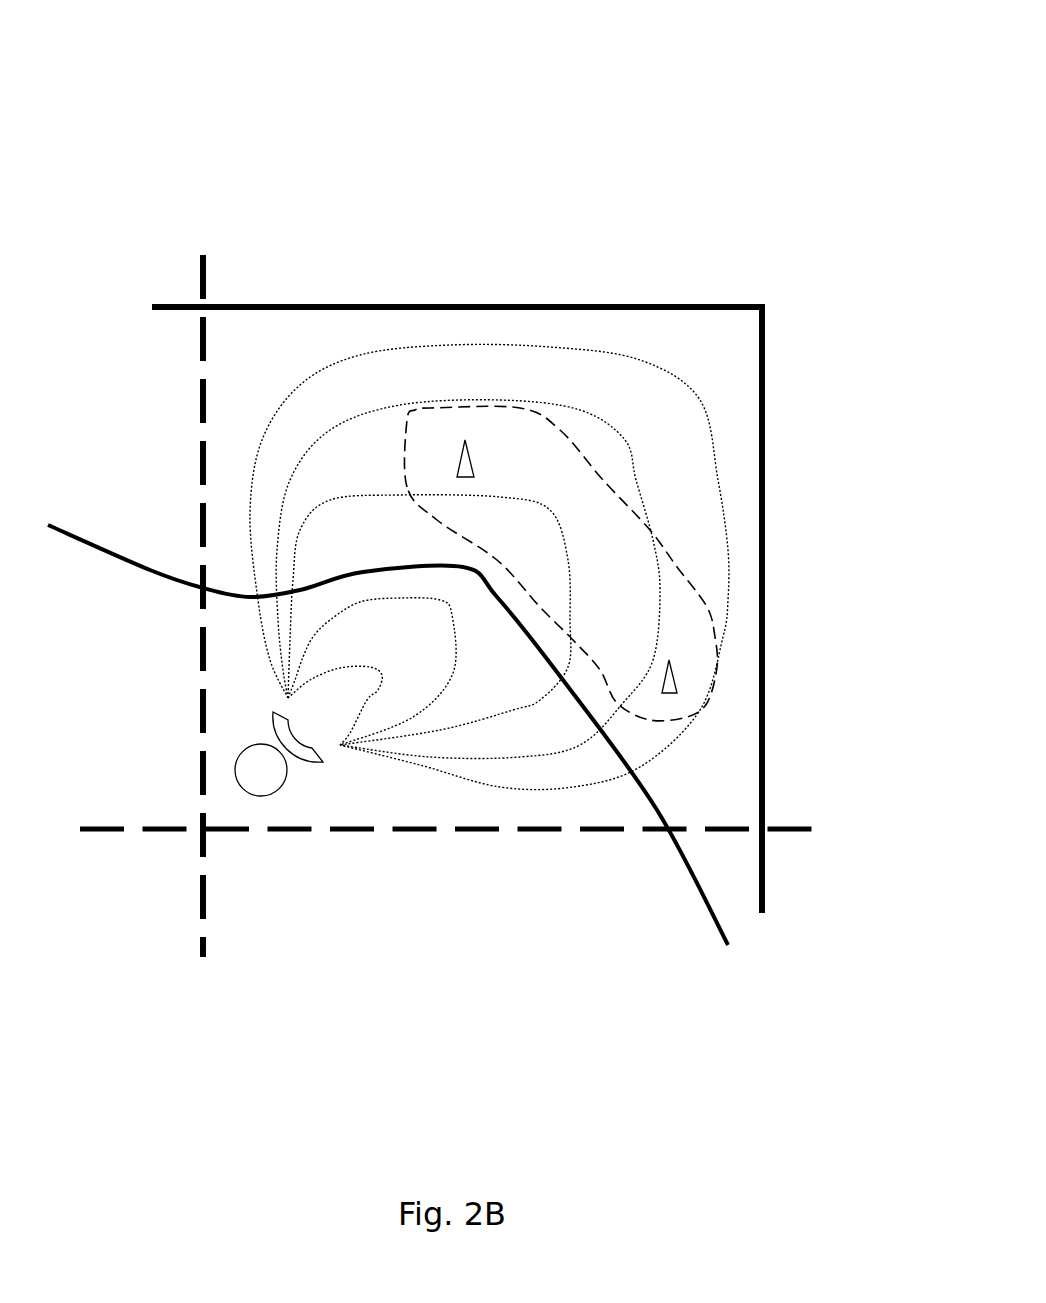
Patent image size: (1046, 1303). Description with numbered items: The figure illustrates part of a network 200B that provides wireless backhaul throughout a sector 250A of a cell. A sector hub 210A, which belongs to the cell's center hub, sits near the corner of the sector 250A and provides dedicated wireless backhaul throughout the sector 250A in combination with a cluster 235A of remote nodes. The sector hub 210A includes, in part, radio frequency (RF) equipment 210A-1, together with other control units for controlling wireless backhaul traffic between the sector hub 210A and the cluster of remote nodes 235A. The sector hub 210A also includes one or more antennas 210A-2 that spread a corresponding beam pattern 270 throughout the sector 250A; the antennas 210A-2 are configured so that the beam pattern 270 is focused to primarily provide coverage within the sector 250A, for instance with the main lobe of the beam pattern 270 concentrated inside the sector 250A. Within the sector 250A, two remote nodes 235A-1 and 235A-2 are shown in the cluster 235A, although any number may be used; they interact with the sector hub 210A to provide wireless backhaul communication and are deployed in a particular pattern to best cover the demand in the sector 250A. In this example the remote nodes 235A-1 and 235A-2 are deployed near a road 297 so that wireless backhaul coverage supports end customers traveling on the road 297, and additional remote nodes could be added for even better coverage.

The network 200B is at (798, 29).
The sector 250A is at (302, 303).
The beam pattern 270 is at (303, 473).
The cluster of remote nodes 235A is at (658, 543).
The remote node 235A-1 is at (682, 678).
The remote node 235A-2 is at (474, 458).
The road 297 is at (677, 863).
The sector hub 210A is at (212, 784).
The radio frequency (RF) equipment 210A-1 is at (235, 777).
The antennas 210A-2 is at (270, 710).